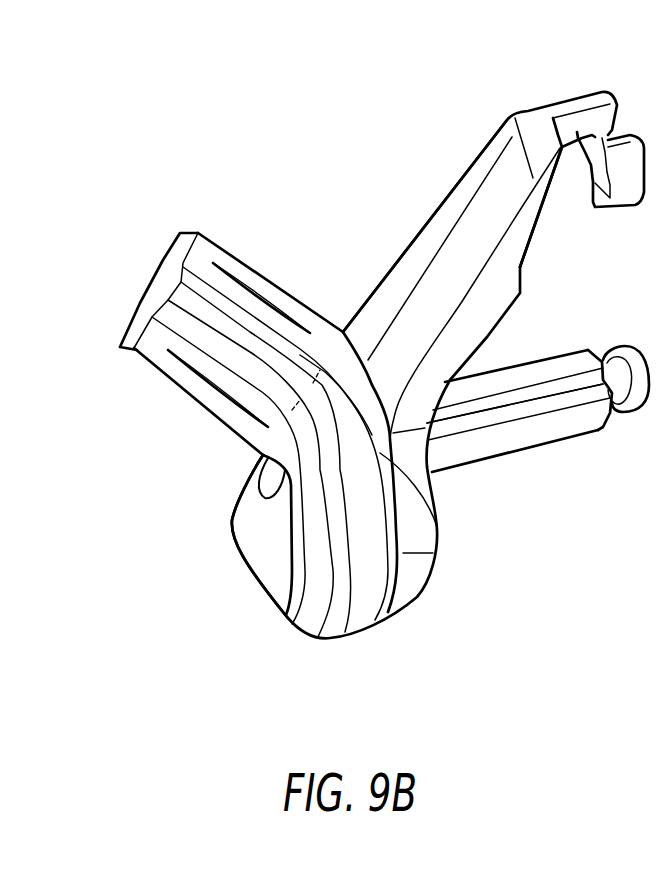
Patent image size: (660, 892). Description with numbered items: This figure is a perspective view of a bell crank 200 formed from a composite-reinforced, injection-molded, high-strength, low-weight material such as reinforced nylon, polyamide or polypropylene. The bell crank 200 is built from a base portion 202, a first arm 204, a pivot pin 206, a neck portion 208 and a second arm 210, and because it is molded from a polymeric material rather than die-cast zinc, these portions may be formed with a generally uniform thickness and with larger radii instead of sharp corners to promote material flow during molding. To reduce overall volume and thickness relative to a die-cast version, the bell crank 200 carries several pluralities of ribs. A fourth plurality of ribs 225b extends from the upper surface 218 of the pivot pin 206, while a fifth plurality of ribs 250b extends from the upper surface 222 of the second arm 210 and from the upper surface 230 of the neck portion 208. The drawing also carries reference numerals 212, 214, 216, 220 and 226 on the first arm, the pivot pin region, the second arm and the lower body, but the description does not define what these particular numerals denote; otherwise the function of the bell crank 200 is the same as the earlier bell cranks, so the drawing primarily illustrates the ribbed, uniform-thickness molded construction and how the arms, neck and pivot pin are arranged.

The bell crank 200 is at (170, 121).
The base portion 202 is at (231, 487).
The first arm 204 is at (428, 151).
The pivot pin 206 is at (541, 492).
The neck portion 208 is at (283, 628).
The second arm 210 is at (136, 241).
The right edge of first arm 212 is at (527, 260).
The left edge of first arm 214 is at (430, 243).
The rod 216 is at (553, 440).
The upper surface of the pivot pin 218 is at (575, 360).
The lower slot 220 is at (152, 367).
The upper surface of the second arm 222 is at (203, 258).
The fourth plurality of ribs 225b is at (558, 400).
The flange edge 226 is at (267, 557).
The upper surface of the neck portion 230 is at (438, 527).
The fifth plurality of ribs 250b is at (323, 462).